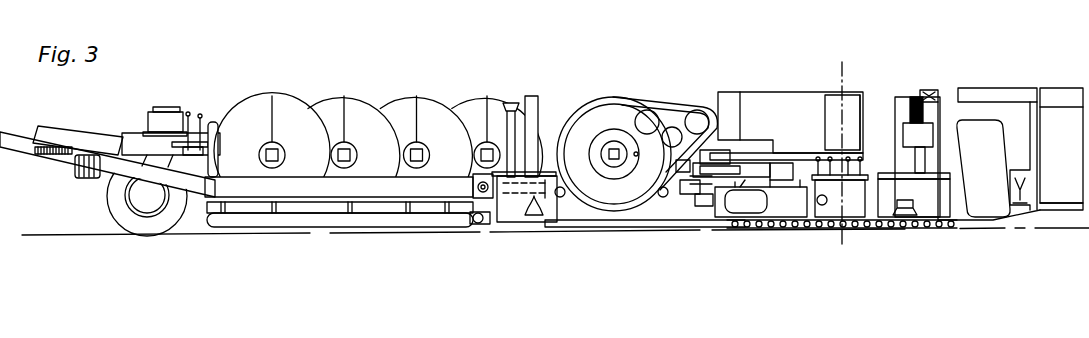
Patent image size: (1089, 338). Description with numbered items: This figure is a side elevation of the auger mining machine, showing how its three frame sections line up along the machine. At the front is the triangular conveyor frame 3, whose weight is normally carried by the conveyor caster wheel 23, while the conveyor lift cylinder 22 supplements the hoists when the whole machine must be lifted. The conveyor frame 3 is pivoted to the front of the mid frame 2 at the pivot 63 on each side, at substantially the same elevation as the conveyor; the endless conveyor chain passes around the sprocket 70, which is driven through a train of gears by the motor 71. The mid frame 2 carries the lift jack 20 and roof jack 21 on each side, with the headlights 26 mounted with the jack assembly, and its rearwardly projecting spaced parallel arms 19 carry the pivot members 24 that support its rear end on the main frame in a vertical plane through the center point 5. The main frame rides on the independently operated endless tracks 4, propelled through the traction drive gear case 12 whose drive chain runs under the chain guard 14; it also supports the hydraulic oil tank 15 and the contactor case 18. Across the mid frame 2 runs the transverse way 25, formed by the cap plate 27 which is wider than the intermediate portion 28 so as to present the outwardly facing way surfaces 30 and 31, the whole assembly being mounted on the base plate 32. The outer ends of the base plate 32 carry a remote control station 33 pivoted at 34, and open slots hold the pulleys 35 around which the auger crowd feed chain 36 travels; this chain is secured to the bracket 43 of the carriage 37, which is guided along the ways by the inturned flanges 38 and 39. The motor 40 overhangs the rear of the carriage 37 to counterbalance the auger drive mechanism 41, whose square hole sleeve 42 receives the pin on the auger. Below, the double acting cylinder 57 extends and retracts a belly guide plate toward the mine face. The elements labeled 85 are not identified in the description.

The mid frame 2 is at (560, 228).
The conveyor frame 3 is at (125, 168).
The endless tracks 4 is at (905, 229).
The center point 5 is at (842, 73).
The traction drive gear case 12 is at (1003, 113).
The chain guard 14 is at (993, 158).
The hydraulic oil tank 15 is at (1023, 105).
The contactor case 18 is at (1069, 130).
The spaced parallel arms 19 is at (800, 189).
The lift jack 20 is at (533, 106).
The roof jack 21 is at (507, 123).
The conveyor lift cylinder 22 is at (214, 122).
The conveyor caster wheel 23 is at (167, 110).
The pivot members 24 is at (860, 168).
The transverse way 25 is at (760, 162).
The headlights 26 is at (910, 97).
The cap plate 27 is at (718, 163).
The intermediate portion 28 is at (732, 170).
The way surface 30 is at (684, 120).
The way surface 31 is at (770, 193).
The base plate 32 is at (743, 193).
The remote control station 33 is at (730, 202).
The pivot 34 is at (737, 189).
The pulleys 35 is at (698, 208).
The auger crowd feed chain 36 is at (683, 170).
The carriage 37 is at (745, 147).
The inturned flange 38 is at (682, 170).
The inturned flange 39 is at (777, 173).
The motor 40 is at (767, 92).
The auger drive mechanism 41 is at (627, 108).
The square hole sleeve 42 is at (618, 147).
The bracket 43 is at (688, 192).
The double acting cylinder 57 is at (562, 196).
The pivot 63 is at (477, 180).
The sprocket 70 is at (44, 150).
The motor 71 is at (85, 179).
The disc wheels 85 is at (328, 108).